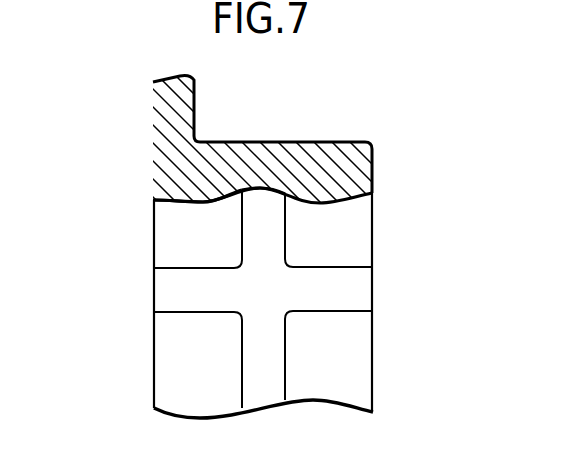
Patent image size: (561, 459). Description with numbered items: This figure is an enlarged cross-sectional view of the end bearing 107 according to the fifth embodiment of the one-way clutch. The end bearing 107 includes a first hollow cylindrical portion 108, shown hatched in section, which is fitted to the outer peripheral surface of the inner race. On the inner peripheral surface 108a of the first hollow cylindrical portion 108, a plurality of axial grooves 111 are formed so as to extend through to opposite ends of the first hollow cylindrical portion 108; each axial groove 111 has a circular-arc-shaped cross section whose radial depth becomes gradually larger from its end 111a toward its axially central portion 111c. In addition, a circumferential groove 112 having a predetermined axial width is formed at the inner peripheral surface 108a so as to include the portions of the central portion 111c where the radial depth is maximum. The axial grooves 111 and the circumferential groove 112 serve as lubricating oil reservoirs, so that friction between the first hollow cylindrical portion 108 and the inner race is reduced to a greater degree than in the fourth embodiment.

The end bearing 107 is at (132, 128).
The first hollow cylindrical portion 108 is at (333, 170).
The inner peripheral surface 108a is at (327, 200).
The axial groove 111 is at (223, 198).
The end of axial groove 111a is at (165, 198).
The axially central portion 111c is at (268, 186).
The circumferential groove 112 is at (287, 234).